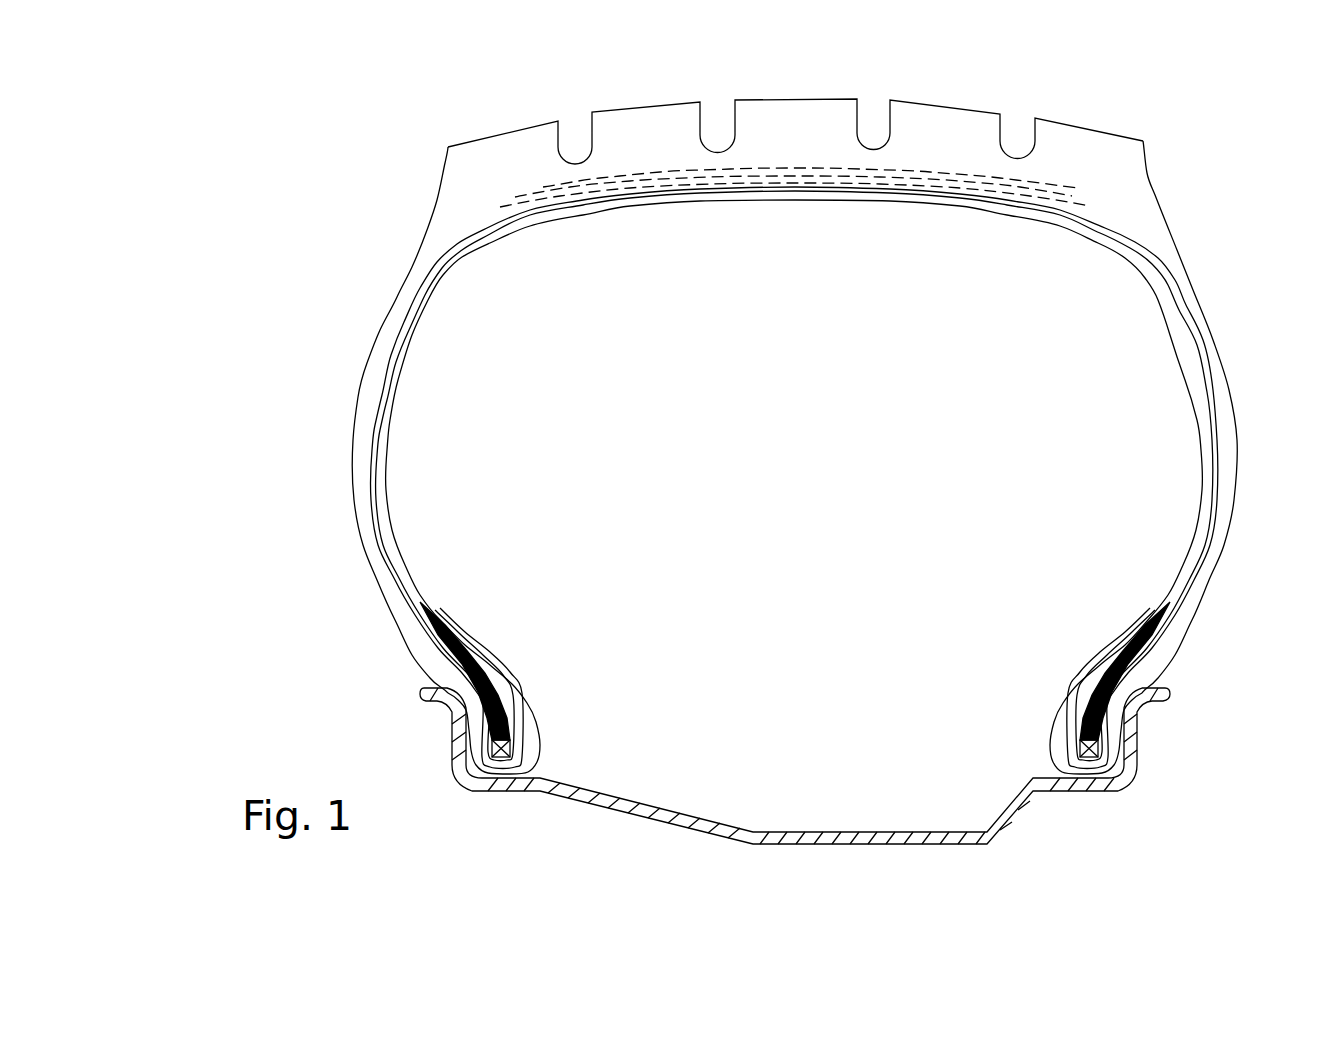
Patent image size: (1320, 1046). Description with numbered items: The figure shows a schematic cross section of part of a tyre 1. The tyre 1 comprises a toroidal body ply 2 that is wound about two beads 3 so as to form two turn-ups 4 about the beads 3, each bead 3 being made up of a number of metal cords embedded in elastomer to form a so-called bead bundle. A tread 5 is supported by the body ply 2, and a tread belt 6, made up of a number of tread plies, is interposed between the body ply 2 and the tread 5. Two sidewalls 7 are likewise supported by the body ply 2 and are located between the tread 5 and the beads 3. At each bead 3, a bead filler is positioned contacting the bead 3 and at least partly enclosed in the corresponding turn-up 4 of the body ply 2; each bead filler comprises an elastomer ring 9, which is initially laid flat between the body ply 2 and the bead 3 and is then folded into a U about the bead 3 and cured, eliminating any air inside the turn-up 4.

The tyre 1 is at (310, 116).
The body ply 2 is at (388, 343).
The bead 3 is at (520, 748).
The turn-up 4 is at (392, 691).
The tread 5 is at (921, 138).
The tread belt 6 is at (775, 180).
The sidewall 7 is at (362, 433).
The elastomer ring 9 is at (503, 697).